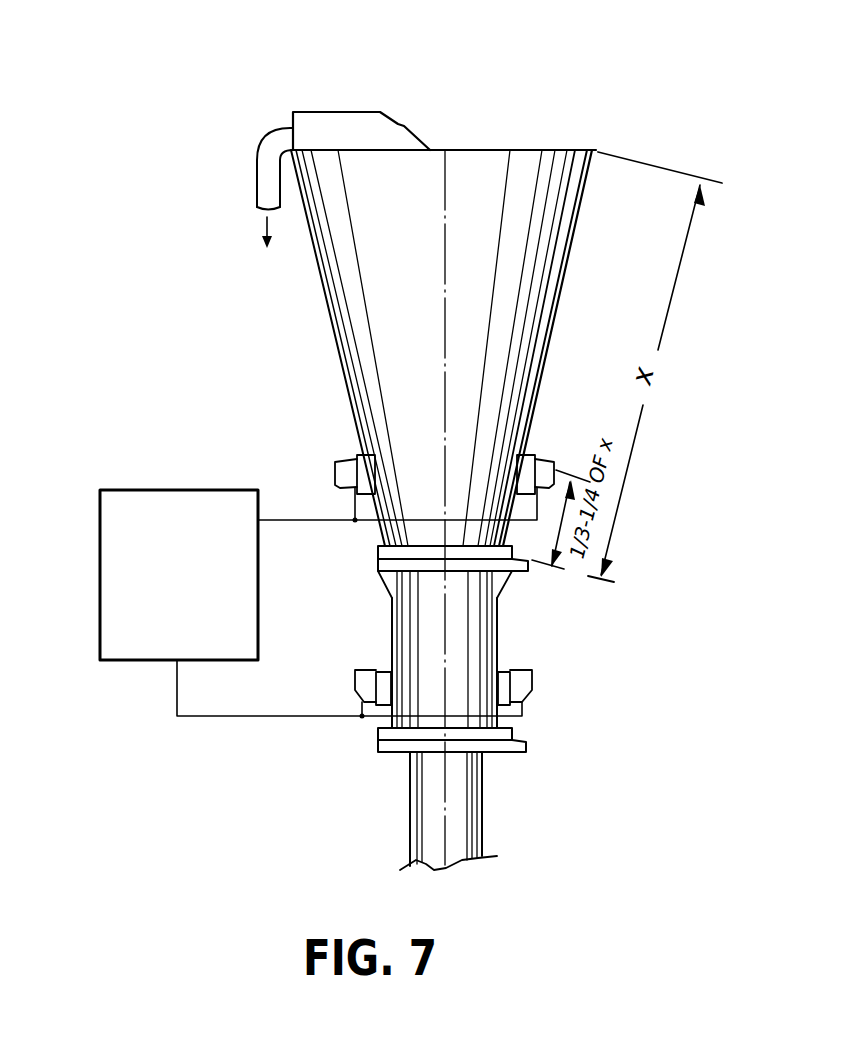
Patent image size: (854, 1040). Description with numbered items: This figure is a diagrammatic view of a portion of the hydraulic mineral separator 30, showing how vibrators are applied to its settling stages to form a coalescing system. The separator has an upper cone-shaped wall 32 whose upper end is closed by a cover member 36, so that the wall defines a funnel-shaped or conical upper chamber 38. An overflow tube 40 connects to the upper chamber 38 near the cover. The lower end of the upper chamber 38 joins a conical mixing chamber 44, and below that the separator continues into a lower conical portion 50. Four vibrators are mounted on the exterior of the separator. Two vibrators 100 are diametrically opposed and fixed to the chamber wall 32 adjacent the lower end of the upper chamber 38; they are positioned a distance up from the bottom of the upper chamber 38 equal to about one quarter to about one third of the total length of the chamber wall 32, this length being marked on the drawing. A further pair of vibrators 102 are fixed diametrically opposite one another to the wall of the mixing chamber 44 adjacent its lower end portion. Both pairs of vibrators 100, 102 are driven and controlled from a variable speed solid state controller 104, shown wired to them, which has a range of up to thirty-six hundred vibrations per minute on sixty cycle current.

The separator apparatus 30 is at (300, 397).
The upper cone-shaped wall 32 is at (348, 356).
The cover member 36 is at (350, 112).
The conical upper chamber 38 is at (326, 289).
The overflow tube 40 is at (256, 172).
The conical mixing chamber 44 is at (391, 636).
The lower conical portion 50 is at (410, 806).
The vibrators 100 is at (338, 462).
The vibrators 102 is at (355, 680).
The variable speed solid state controller 104 is at (173, 490).